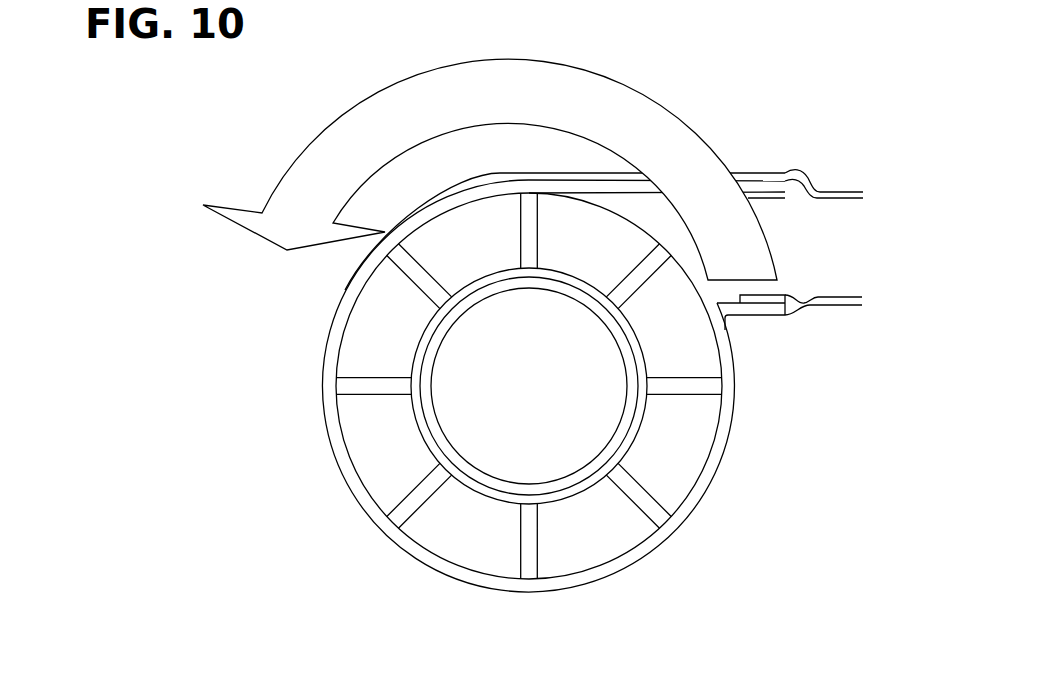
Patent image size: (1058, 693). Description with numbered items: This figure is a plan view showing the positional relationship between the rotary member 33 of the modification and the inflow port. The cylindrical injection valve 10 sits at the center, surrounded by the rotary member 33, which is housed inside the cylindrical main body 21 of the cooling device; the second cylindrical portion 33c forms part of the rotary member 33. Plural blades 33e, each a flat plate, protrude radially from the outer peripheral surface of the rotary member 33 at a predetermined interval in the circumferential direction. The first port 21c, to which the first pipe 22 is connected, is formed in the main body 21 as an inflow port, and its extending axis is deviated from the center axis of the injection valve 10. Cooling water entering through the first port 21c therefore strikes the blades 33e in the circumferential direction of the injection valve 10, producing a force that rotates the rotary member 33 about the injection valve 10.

The injection valve 10 is at (618, 363).
The main body 21 is at (733, 443).
The first port 21c is at (763, 175).
The first pipe 22 is at (833, 190).
The rotary member 33 is at (403, 354).
The second cylindrical portion 33c is at (420, 430).
The blades 33e is at (539, 560).